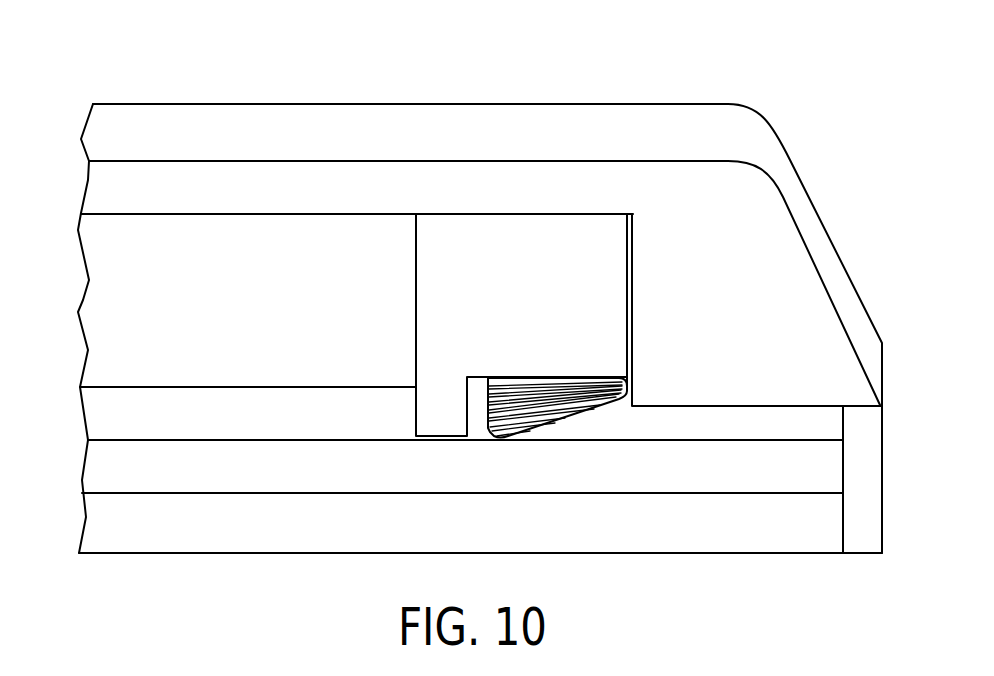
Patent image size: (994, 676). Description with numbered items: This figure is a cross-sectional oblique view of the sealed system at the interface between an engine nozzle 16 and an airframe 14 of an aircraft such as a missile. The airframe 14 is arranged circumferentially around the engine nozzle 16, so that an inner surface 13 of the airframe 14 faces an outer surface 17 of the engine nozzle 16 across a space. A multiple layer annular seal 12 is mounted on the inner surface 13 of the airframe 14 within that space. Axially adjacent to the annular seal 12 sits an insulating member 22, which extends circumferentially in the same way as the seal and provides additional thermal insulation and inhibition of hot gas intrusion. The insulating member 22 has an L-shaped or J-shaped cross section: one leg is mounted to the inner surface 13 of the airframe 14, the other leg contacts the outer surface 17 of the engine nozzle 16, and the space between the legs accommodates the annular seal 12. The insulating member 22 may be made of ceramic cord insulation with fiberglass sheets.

The annular seal 12 is at (593, 420).
The inner surface 13 is at (172, 214).
The airframe 14 is at (386, 141).
The engine nozzle 16 is at (192, 470).
The outer surface 17 is at (141, 416).
The insulating member 22 is at (529, 262).